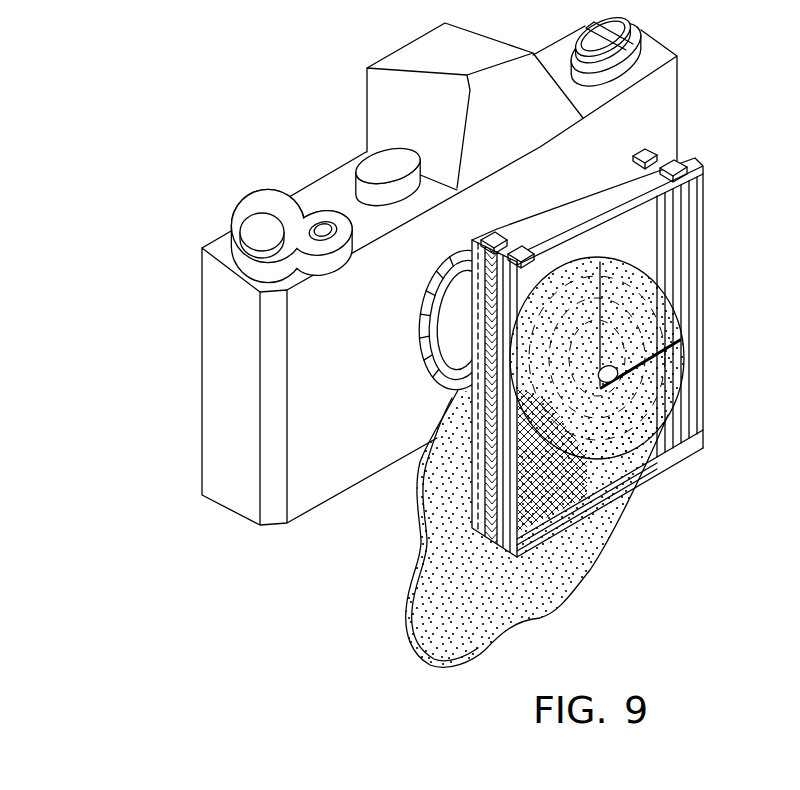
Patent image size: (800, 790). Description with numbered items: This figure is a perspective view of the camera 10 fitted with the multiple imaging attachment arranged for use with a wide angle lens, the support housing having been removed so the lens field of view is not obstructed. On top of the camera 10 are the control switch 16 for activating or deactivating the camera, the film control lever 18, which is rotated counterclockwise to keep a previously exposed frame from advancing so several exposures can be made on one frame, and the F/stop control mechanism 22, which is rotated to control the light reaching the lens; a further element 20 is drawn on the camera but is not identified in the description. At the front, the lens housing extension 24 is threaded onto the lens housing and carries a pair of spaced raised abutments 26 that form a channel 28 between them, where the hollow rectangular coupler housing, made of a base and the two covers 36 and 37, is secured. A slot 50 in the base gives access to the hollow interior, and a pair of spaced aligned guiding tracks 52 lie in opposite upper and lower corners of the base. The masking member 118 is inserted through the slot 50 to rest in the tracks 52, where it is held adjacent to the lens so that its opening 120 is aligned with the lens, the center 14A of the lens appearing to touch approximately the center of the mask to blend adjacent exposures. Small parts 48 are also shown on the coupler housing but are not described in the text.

The camera 10 is at (200, 397).
The center of the lens 14A is at (616, 372).
The control switch 16 is at (343, 238).
The film control lever 18 is at (292, 197).
The control knob 20 is at (368, 178).
The F/stop control mechanism 22 is at (424, 344).
The lens housing extension 24 is at (540, 283).
The raised abutments 26 is at (640, 302).
The channel 28 is at (478, 522).
The cover 36 is at (576, 314).
The cover 37 is at (590, 181).
The clips 48 is at (521, 250).
The slot 50 is at (478, 398).
The guiding tracks 52 is at (468, 262).
The masking member 118 is at (557, 586).
The opening 120 is at (600, 335).